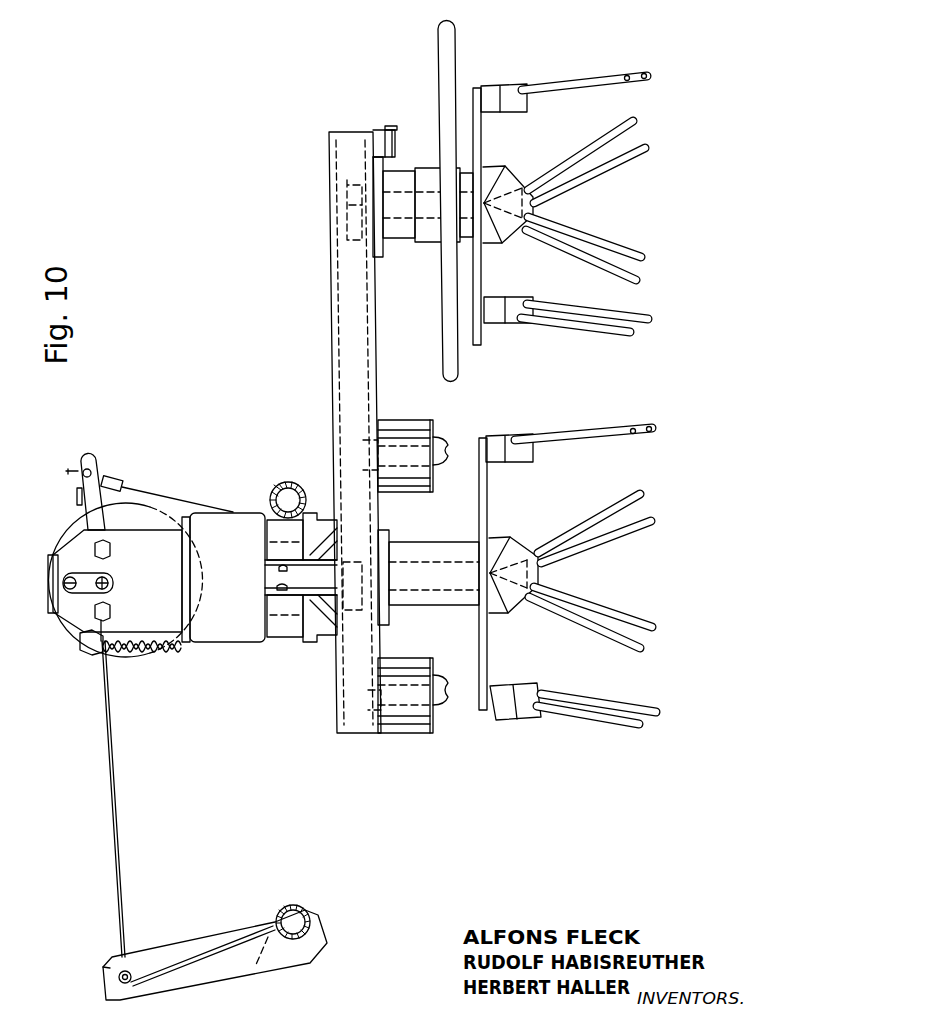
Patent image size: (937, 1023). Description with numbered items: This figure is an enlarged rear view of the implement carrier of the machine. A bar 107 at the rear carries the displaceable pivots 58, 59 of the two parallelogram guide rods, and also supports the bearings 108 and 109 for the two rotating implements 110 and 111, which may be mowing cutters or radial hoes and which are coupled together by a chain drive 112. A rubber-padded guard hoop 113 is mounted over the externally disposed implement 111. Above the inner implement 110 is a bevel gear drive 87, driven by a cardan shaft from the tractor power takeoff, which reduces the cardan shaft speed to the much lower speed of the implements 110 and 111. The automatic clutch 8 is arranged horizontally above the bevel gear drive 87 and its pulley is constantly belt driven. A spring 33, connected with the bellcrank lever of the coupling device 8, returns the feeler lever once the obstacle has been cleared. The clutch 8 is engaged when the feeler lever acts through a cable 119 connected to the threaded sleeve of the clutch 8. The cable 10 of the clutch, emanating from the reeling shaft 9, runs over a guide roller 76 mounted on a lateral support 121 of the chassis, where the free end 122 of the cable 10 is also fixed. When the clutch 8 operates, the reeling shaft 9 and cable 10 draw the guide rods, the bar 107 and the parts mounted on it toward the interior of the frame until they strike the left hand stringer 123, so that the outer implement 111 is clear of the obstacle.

The automatic clutch 8 is at (113, 555).
The reeling shaft 9 is at (120, 583).
The cable 10 is at (122, 788).
The spring 33 is at (130, 664).
The displaceable pivot 58 is at (413, 719).
The displaceable pivot 59 is at (413, 435).
The guide roller 76 is at (110, 955).
The bevel gear drive 87 is at (259, 578).
The bar 107 is at (336, 432).
The bearing 108 is at (428, 564).
The bearing 109 is at (423, 223).
The inner rotating implement 110 is at (567, 576).
The outer rotating implement 111 is at (560, 210).
The chain drive 112 is at (332, 445).
The guard hoop 113 is at (433, 201).
The cable 119 is at (177, 482).
The lateral support 121 is at (215, 951).
The free end of the cable 122 is at (203, 935).
The left hand stringer 123 is at (302, 900).